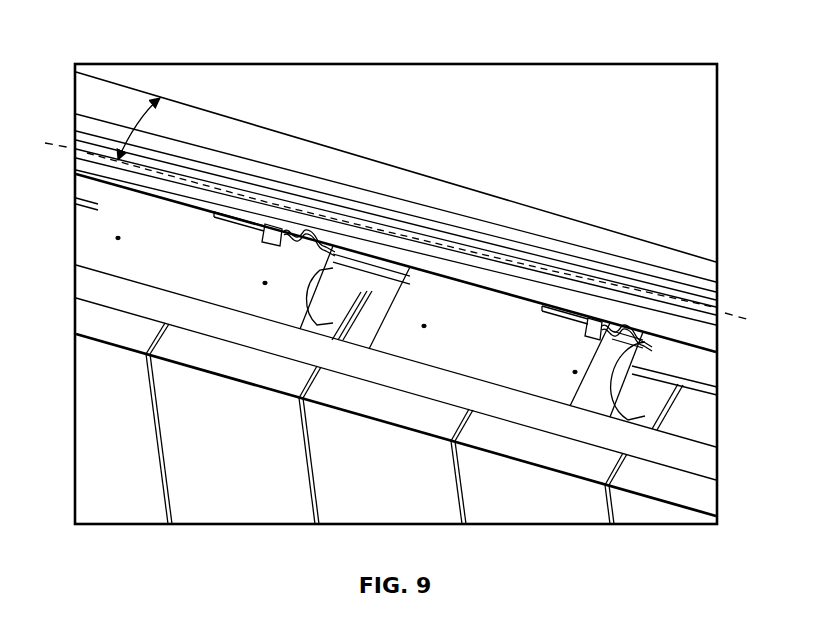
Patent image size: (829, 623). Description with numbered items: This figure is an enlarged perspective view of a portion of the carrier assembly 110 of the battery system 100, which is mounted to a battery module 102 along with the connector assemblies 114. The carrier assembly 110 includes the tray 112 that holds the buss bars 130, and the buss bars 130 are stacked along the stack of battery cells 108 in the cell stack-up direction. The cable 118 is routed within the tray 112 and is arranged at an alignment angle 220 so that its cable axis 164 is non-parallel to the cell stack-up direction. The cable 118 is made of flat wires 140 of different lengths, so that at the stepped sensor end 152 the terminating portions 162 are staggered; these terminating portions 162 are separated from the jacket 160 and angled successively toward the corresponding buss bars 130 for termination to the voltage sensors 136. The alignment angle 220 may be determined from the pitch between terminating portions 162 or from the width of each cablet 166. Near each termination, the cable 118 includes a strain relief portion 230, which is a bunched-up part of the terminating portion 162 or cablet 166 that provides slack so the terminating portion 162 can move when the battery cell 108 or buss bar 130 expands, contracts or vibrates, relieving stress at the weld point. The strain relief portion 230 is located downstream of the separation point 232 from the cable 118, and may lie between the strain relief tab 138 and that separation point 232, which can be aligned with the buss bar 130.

The battery system 100 is at (223, 115).
The battery module 102 is at (68, 516).
The battery cell 108 is at (238, 497).
The carrier assembly 110 is at (92, 302).
The tray 112 is at (140, 300).
The connector assembly 114 is at (125, 184).
The cable 118 is at (478, 232).
The buss bar 130 is at (213, 287).
The voltage sensor 136 is at (548, 325).
The strain relief tab 138 is at (592, 333).
The flat wire 140 is at (222, 218).
The sensor end 152 is at (100, 240).
The jacket 160 is at (640, 352).
The terminating portion 162 is at (573, 340).
The cable axis 164 is at (64, 143).
The cablet 166 is at (613, 342).
The alignment angle 220 is at (133, 128).
The strain relief portion 230 is at (622, 320).
The separation point 232 is at (650, 333).